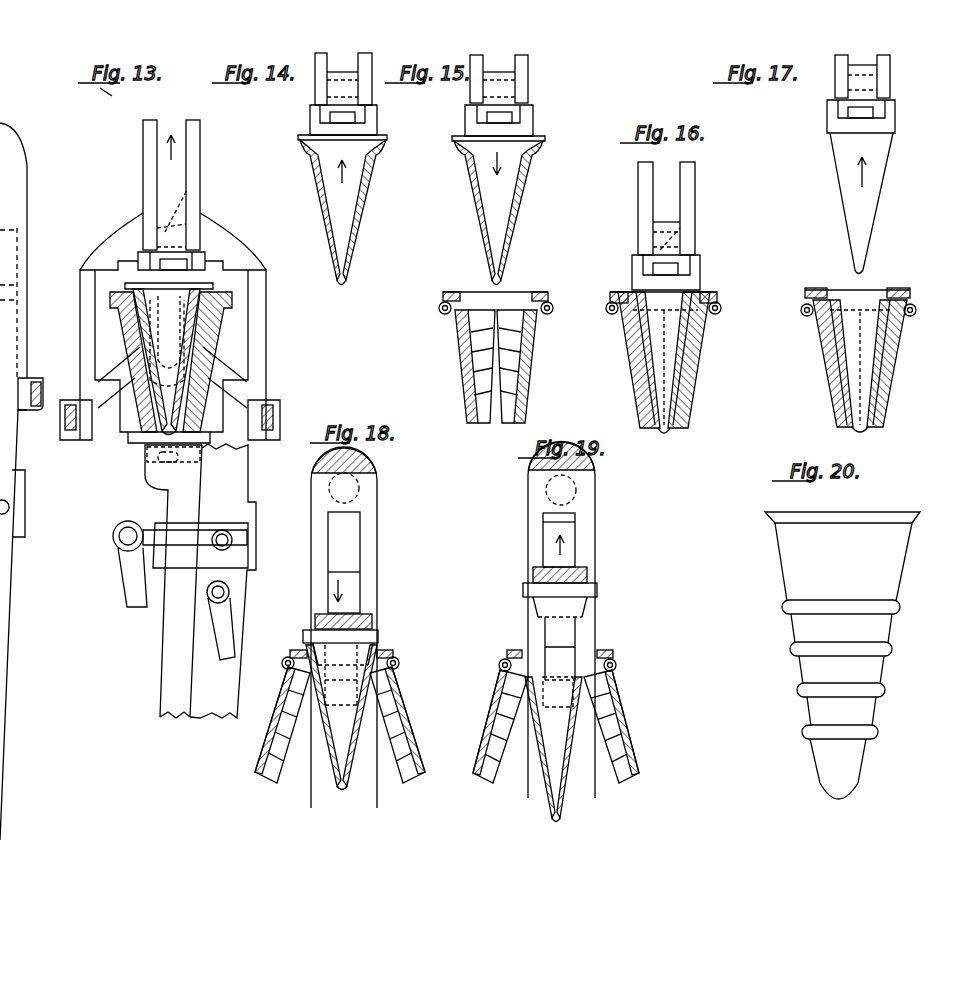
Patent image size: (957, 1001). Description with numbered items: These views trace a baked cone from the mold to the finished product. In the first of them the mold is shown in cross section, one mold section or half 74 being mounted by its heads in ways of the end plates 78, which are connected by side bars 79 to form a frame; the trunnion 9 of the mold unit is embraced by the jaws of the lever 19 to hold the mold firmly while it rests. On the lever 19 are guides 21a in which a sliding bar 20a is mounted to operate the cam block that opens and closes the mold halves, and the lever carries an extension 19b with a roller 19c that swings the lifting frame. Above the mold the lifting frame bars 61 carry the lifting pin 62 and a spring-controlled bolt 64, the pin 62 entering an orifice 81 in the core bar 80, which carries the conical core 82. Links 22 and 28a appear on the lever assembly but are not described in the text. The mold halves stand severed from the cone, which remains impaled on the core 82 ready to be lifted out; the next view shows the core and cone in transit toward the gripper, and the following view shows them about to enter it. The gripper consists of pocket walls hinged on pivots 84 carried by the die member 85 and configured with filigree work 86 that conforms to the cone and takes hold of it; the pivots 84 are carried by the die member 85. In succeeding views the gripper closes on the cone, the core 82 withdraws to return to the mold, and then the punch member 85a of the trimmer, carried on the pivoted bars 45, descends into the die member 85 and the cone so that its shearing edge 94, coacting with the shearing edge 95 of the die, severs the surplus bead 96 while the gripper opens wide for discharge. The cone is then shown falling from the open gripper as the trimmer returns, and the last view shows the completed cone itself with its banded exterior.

In FIG. 13, the trunnion 9 is at (0, 298).
In FIG. 13, the lever 19 is at (233, 480).
In FIG. 13, the extension 19b is at (0, 140).
In FIG. 13, the roller 19c is at (7, 87).
In FIG. 13, the sliding bar 20a is at (166, 618).
In FIG. 13, the guides 21a is at (255, 518).
In FIG. 13, the link 22 is at (125, 588).
In FIG. 13, the link 28a is at (215, 632).
In FIG. 18, the bars 45 is at (378, 512).
In FIG. 19, the bars 45 is at (595, 517).
In FIG. 13, the lifting frame bars 61 is at (200, 142).
In FIG. 14, the lifting frame bars 61 is at (358, 68).
In FIG. 15, the lifting frame bars 61 is at (528, 66).
In FIG. 16, the lifting frame bars 61 is at (695, 200).
In FIG. 17, the lifting frame bars 61 is at (890, 65).
In FIG. 13, the lifting pin 62 is at (205, 195).
In FIG. 14, the lifting pin 62 is at (372, 95).
In FIG. 15, the lifting pin 62 is at (528, 82).
In FIG. 16, the lifting pin 62 is at (695, 225).
In FIG. 17, the lifting pin 62 is at (890, 78).
In FIG. 13, the bolt 64 is at (143, 200).
In FIG. 14, the bolt 64 is at (315, 90).
In FIG. 15, the bolt 64 is at (470, 96).
In FIG. 16, the bolt 64 is at (638, 188).
In FIG. 17, the bolt 64 is at (835, 72).
In FIG. 13, the mold section or half 74 is at (120, 320).
In FIG. 13, the end plates 78 is at (100, 268).
In FIG. 13, the side bars 79 is at (55, 400).
In FIG. 13, the core bar 80 is at (182, 222).
In FIG. 13, the orifices 81 is at (152, 232).
In FIG. 14, the orifices 81 is at (308, 110).
In FIG. 15, the orifices 81 is at (528, 97).
In FIG. 16, the orifices 81 is at (695, 238).
In FIG. 17, the orifices 81 is at (890, 95).
In FIG. 13, the conical core 82 is at (190, 305).
In FIG. 14, the conical core 82 is at (318, 165).
In FIG. 15, the conical core 82 is at (520, 165).
In FIG. 16, the conical core 82 is at (670, 338).
In FIG. 17, the conical core 82 is at (875, 165).
In FIG. 18, the conical core 82 is at (341, 717).
In FIG. 19, the conical core 82 is at (553, 749).
In FIG. 20, the conical core 82 is at (842, 655).
In FIG. 15, the hinges or pivots 84 is at (439, 310).
In FIG. 16, the hinges or pivots 84 is at (722, 310).
In FIG. 17, the hinges or pivots 84 is at (916, 312).
In FIG. 18, the hinges or pivots 84 is at (282, 666).
In FIG. 19, the hinges or pivots 84 is at (499, 665).
In FIG. 15, the die member 85 is at (448, 292).
In FIG. 16, the die member 85 is at (715, 292).
In FIG. 17, the die member 85 is at (808, 288).
In FIG. 18, the die member 85 is at (290, 654).
In FIG. 19, the die member 85 is at (510, 650).
In FIG. 18, the punch member 85a is at (368, 612).
In FIG. 19, the punch member 85a is at (597, 583).
In FIG. 15, the filigree work 86 is at (466, 378).
In FIG. 16, the filigree work 86 is at (642, 375).
In FIG. 17, the filigree work 86 is at (832, 388).
In FIG. 18, the filigree work 86 is at (278, 712).
In FIG. 19, the filigree work 86 is at (488, 714).
In FIG. 15, the shearing edge 94 is at (532, 292).
In FIG. 16, the shearing edge 94 is at (700, 292).
In FIG. 17, the shearing edge 94 is at (880, 292).
In FIG. 18, the shearing edge 94 is at (298, 650).
In FIG. 19, the shearing edge 94 is at (600, 650).
In FIG. 18, the shearing edge 95 is at (378, 630).
In FIG. 19, the shearing edge 95 is at (597, 592).
In FIG. 16, the surplus bead or material 96 is at (708, 295).
In FIG. 17, the surplus bead or material 96 is at (823, 292).
In FIG. 18, the surplus bead or material 96 is at (300, 650).